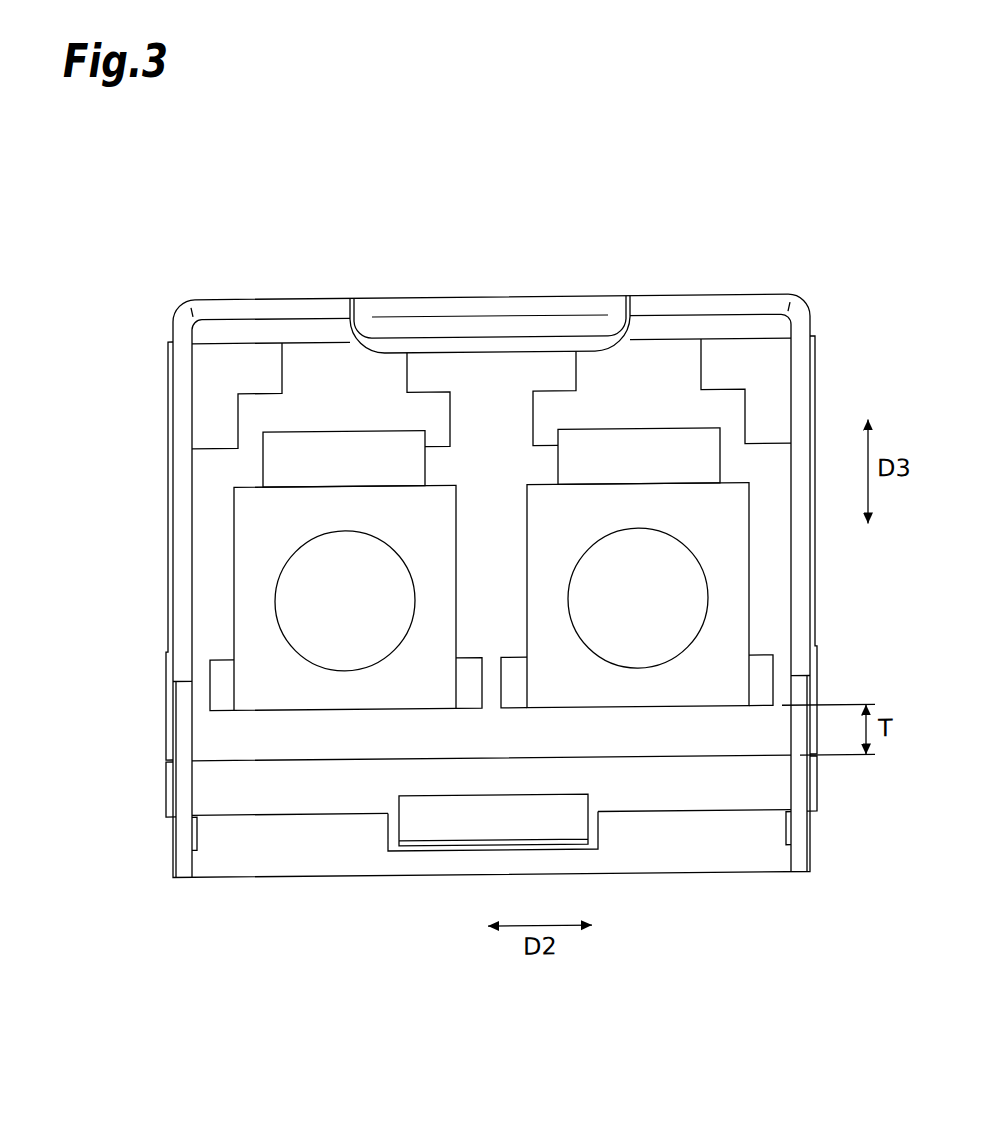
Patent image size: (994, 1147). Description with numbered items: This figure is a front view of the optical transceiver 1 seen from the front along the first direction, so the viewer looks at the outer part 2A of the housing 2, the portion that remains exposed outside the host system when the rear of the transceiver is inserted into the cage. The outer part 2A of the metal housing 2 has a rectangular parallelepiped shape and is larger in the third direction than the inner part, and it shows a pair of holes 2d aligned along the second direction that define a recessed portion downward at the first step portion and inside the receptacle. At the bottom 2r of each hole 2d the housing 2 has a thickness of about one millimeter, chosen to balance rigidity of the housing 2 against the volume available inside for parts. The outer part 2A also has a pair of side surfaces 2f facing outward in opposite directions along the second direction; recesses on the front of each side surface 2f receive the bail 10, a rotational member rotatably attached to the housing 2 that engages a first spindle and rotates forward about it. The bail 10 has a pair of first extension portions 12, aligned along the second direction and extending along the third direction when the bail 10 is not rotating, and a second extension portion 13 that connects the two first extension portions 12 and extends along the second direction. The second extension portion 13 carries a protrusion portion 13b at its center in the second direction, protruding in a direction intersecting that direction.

The optical transceiver 1 is at (672, 139).
The housing 2 is at (319, 340).
The outer part 2A is at (657, 341).
The holes 2d is at (236, 592).
The side surfaces 2f is at (168, 368).
The bottom of the hole 2r is at (308, 709).
The bail 10 is at (572, 291).
The first extension portions 12 is at (178, 410).
The second extension portion 13 is at (470, 297).
The protrusion portion 13b is at (443, 340).